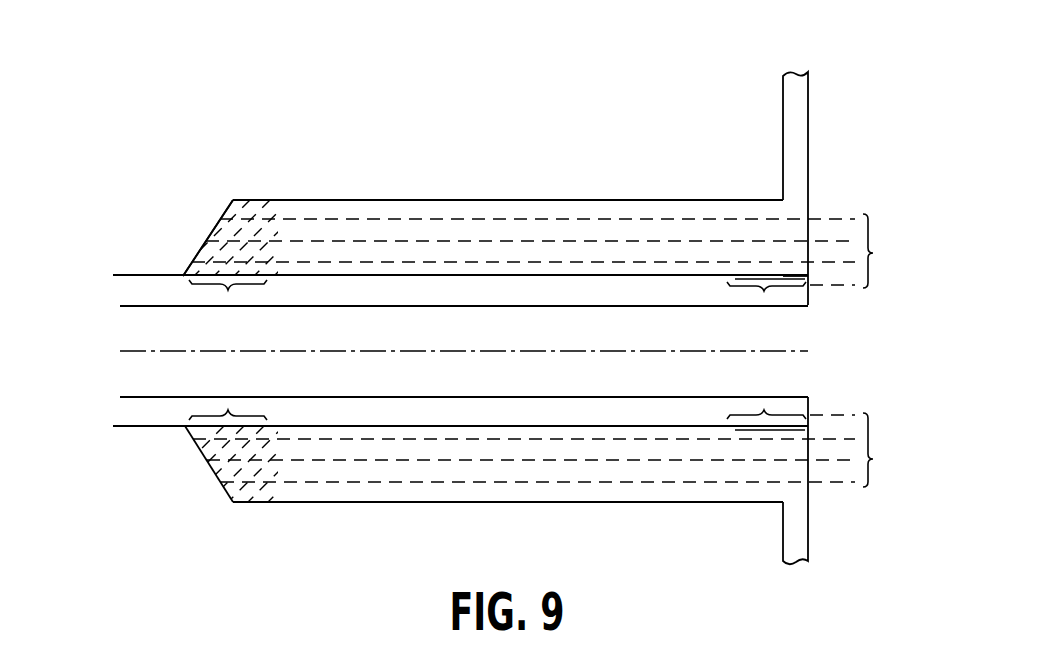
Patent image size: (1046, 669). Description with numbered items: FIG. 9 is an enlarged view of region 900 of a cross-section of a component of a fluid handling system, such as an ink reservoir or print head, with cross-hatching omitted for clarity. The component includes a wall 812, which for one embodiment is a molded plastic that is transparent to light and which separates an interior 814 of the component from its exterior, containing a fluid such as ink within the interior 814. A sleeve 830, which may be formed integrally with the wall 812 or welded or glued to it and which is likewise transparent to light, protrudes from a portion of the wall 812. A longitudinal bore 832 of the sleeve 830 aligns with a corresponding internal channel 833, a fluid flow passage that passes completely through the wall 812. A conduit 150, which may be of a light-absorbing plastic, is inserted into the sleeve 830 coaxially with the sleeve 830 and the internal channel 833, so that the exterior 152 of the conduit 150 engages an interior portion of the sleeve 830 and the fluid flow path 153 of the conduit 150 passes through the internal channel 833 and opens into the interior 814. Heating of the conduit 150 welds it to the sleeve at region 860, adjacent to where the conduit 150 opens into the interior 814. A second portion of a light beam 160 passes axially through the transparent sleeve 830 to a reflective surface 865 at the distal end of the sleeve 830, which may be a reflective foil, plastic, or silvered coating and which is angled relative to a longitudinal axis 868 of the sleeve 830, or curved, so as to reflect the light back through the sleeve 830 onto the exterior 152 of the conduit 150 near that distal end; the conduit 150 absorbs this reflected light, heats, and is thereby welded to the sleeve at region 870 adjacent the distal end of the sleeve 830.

The region 900 is at (516, 66).
The wall 812 is at (793, 132).
The interior 814 is at (835, 390).
The sleeve 830 is at (557, 200).
The longitudinal bore 832 is at (183, 275).
The internal channel 833 is at (804, 272).
The region 860 is at (764, 410).
The reflective surface 865 is at (236, 206).
The longitudinal axis 868 is at (137, 351).
The region 870 is at (228, 290).
The conduit 150 is at (165, 286).
The exterior 152 is at (163, 427).
The fluid flow path 153 is at (163, 331).
The light beam 160 is at (874, 253).